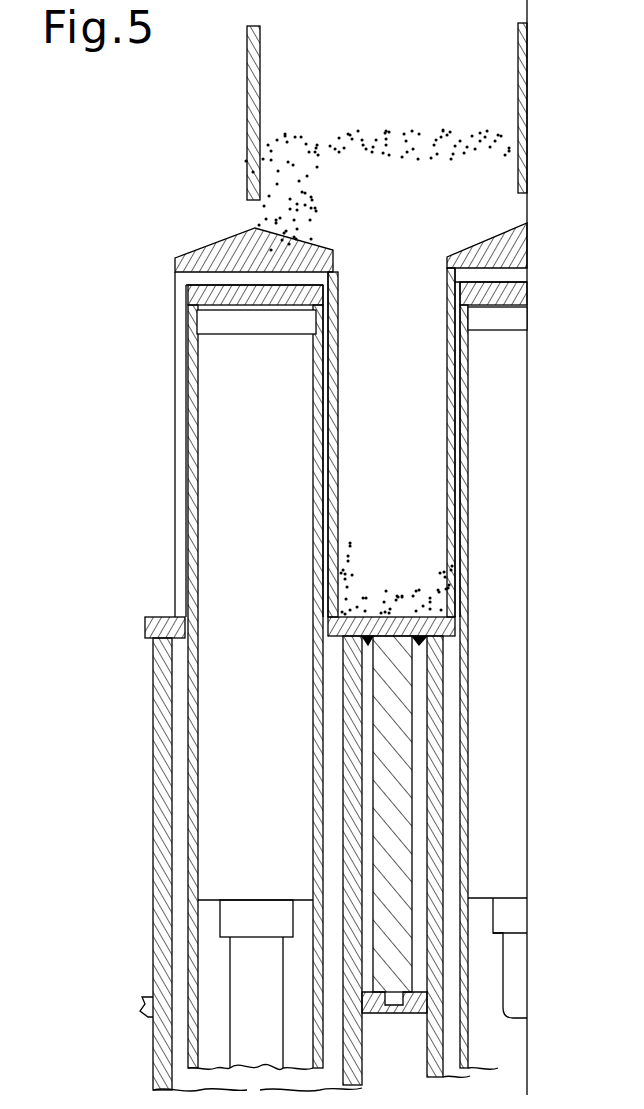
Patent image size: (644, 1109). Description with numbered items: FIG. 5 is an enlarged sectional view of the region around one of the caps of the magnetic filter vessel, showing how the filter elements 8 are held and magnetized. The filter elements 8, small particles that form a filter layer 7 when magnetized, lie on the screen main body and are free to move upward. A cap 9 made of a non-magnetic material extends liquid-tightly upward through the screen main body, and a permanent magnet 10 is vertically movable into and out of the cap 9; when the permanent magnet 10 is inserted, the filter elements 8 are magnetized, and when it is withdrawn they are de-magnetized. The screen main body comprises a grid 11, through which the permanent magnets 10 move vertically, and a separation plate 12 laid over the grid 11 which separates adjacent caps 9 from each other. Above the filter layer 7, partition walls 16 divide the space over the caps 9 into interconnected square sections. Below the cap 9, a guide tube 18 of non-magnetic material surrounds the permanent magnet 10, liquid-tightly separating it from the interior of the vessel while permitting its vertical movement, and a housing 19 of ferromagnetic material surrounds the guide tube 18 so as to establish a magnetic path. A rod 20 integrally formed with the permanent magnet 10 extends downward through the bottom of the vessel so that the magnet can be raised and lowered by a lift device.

The filter layer 7 is at (471, 133).
The filter elements 8 is at (331, 140).
The cap 9 is at (198, 258).
The permanent magnet 10 is at (208, 537).
The grid 11 is at (397, 766).
The separation plate 12 is at (378, 625).
The partition walls 16 is at (248, 116).
The guide tube 18 is at (190, 880).
The housing 19 is at (153, 965).
The rod 20 is at (237, 1018).